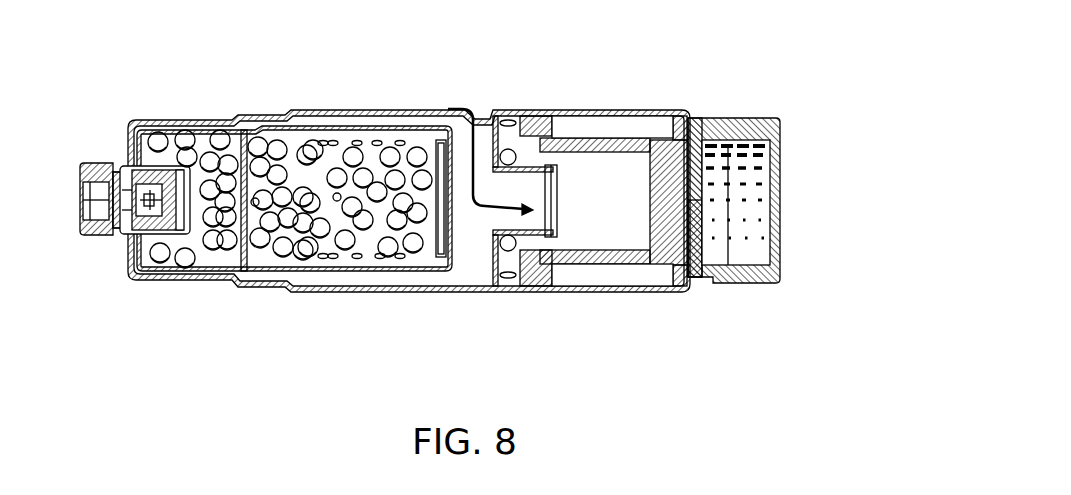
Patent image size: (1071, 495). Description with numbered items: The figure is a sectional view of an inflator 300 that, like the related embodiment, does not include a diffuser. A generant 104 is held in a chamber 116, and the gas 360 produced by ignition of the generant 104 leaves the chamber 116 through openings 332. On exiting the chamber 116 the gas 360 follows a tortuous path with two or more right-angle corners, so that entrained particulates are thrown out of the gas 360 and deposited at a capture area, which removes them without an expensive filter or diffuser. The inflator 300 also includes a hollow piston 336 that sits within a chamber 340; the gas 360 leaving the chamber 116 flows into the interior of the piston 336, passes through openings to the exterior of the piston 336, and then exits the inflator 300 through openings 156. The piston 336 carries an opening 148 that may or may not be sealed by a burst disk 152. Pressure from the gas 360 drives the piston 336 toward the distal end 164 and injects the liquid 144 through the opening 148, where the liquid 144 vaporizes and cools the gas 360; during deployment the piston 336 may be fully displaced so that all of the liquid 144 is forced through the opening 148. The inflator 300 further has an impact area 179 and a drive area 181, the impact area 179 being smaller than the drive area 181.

The generant 104 is at (343, 115).
The chamber 116 is at (380, 223).
The liquid 144 is at (733, 213).
The opening 148 is at (683, 190).
The burst disk 152 is at (557, 190).
The openings 156 is at (508, 280).
The distal end 164 is at (800, 262).
The impact area 179 is at (699, 253).
The drive area 181 is at (519, 100).
The inflator 300 is at (165, 310).
The openings 332 is at (323, 130).
The piston 336 is at (587, 237).
The chamber 340 is at (627, 120).
The gas 360 is at (520, 265).